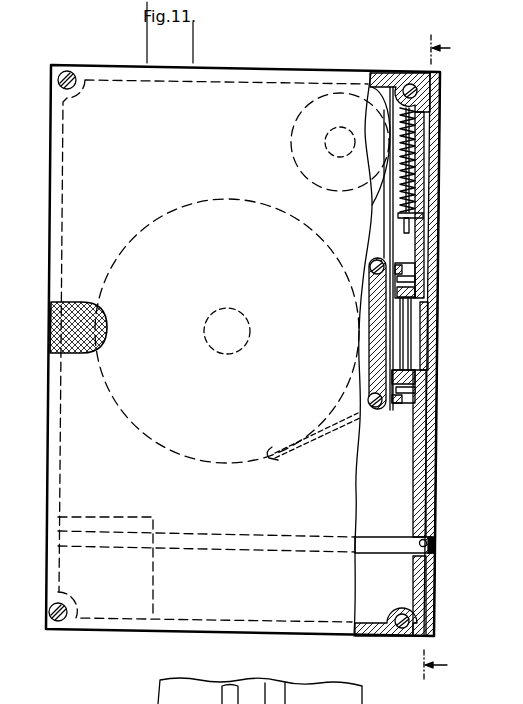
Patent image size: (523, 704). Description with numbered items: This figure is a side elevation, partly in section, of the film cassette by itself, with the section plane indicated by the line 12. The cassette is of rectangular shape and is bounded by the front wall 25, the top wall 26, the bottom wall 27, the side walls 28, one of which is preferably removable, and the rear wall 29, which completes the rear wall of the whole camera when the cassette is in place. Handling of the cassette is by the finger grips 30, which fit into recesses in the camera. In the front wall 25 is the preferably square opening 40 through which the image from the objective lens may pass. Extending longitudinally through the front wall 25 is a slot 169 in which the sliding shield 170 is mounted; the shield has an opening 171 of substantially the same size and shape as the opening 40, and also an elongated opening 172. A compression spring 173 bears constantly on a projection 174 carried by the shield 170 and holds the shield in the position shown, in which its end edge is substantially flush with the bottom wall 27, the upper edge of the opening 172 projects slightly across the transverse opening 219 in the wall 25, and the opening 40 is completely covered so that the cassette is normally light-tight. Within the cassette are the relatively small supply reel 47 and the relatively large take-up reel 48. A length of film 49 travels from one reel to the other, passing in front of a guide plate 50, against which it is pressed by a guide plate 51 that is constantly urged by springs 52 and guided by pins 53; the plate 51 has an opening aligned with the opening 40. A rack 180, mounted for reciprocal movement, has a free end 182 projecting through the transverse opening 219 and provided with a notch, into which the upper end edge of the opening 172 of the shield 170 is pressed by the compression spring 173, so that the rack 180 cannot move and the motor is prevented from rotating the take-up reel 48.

The section line 12- 12 is at (450, 357).
The front wall 25 is at (424, 236).
The top wall 26 is at (372, 73).
The bottom wall 27 is at (352, 637).
The side walls 28 is at (521, 365).
The rear wall 29 is at (49, 444).
The finger grips 30 is at (80, 301).
The opening 40 is at (427, 371).
The supply reel 47 is at (324, 93).
The take-up reel 48 is at (165, 448).
The film 49 is at (390, 200).
The guide plate 50 is at (380, 313).
The guide plate 51 is at (400, 266).
The springs 52 is at (415, 291).
The pins 53 is at (415, 278).
The slot 169 is at (429, 92).
The sliding shield 170 is at (437, 478).
The opening 171 is at (426, 411).
The elongated opening 172 is at (420, 599).
The compression spring 173 is at (418, 127).
The projection 174 is at (400, 220).
The rack 180 is at (375, 543).
The free end 182 is at (435, 548).
The transverse opening 219 is at (430, 538).